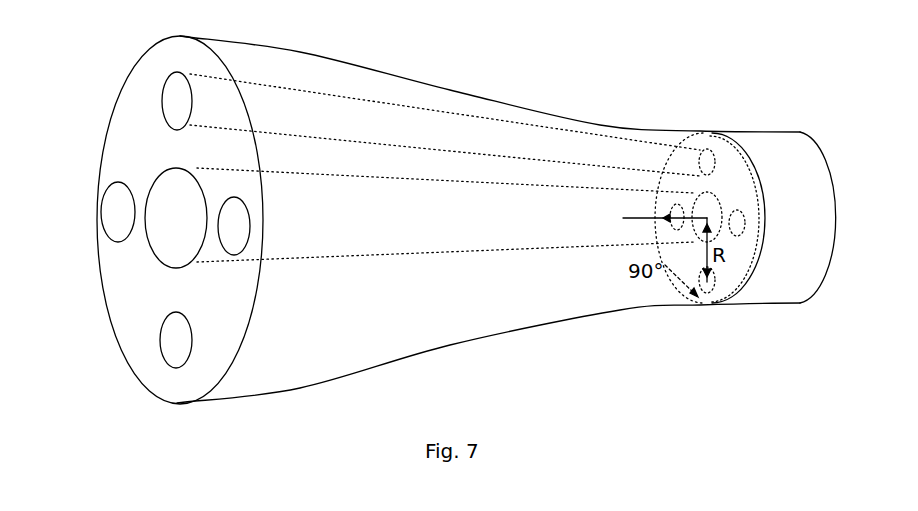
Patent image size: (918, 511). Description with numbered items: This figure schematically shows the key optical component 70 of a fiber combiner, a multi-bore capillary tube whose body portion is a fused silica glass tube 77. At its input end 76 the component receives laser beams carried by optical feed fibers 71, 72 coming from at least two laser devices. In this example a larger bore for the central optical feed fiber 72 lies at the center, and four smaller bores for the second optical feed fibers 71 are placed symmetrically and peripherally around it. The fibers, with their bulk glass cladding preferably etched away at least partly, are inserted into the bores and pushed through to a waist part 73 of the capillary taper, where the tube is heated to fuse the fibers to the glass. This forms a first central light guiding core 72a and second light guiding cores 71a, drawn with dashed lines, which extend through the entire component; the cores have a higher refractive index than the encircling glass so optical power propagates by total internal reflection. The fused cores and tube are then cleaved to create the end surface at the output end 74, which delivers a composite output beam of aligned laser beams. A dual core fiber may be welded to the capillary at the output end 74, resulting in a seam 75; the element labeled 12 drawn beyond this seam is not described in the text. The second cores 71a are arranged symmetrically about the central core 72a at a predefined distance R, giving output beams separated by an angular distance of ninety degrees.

The optical component 70 is at (145, 44).
The optical feed fibers 71 is at (113, 208).
The optical feed fiber 72 is at (190, 230).
The input end 76 is at (135, 305).
The second light guiding cores 71a is at (392, 110).
The first central light guiding core 72a is at (545, 250).
The waist part 73 is at (598, 122).
The fused silica glass tube 77 is at (430, 290).
The output end 74 is at (733, 187).
The seam 75 is at (763, 195).
The cylinder 12 is at (802, 172).